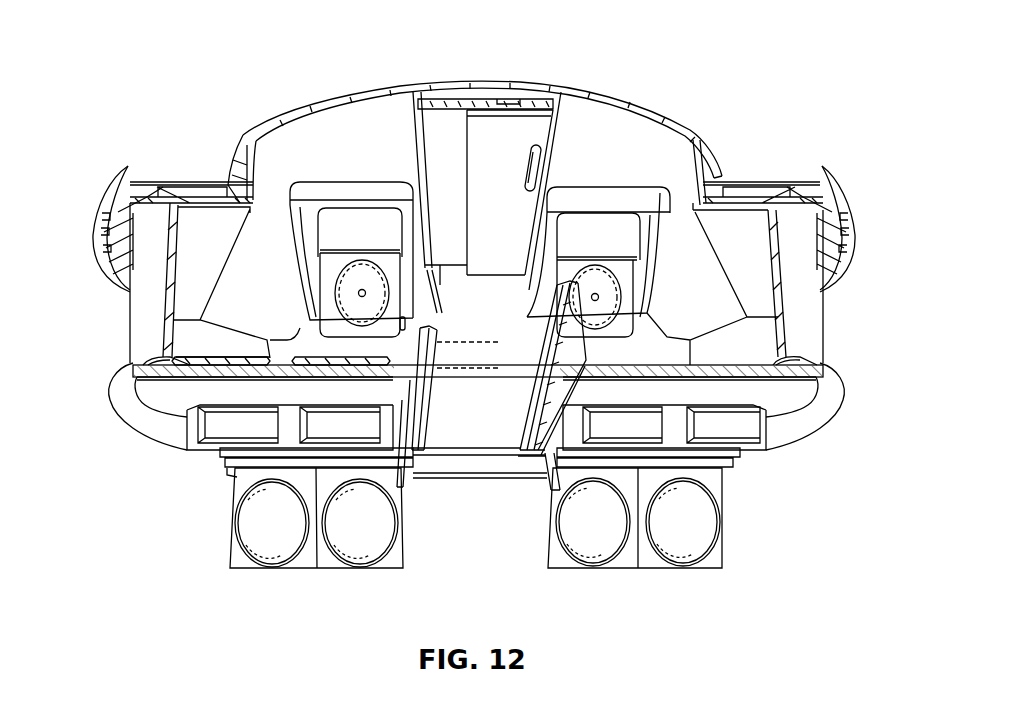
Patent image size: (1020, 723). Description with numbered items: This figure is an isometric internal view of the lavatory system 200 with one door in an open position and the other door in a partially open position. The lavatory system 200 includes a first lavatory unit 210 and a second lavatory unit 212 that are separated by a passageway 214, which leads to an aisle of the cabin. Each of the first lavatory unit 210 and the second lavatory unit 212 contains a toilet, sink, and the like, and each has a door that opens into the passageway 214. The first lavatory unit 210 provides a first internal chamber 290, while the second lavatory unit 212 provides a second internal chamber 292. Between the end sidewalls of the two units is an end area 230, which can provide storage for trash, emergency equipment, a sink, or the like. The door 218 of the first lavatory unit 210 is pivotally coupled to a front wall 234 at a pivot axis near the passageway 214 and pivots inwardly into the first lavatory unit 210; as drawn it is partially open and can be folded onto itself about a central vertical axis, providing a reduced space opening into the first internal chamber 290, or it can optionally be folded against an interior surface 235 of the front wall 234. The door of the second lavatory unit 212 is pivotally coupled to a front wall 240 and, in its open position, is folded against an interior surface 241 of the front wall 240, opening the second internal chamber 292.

The lavatory system 200 is at (410, 80).
The first lavatory unit 210 is at (638, 100).
The second lavatory unit 212 is at (243, 127).
The passageway 214 is at (430, 558).
The door 218 is at (528, 387).
The end area 230 is at (500, 103).
The front wall 234 is at (600, 357).
The interior surface 235 is at (745, 366).
The front wall 240 is at (167, 420).
The interior surface 241 is at (428, 416).
The first internal chamber 290 is at (676, 240).
The second internal chamber 292 is at (368, 125).